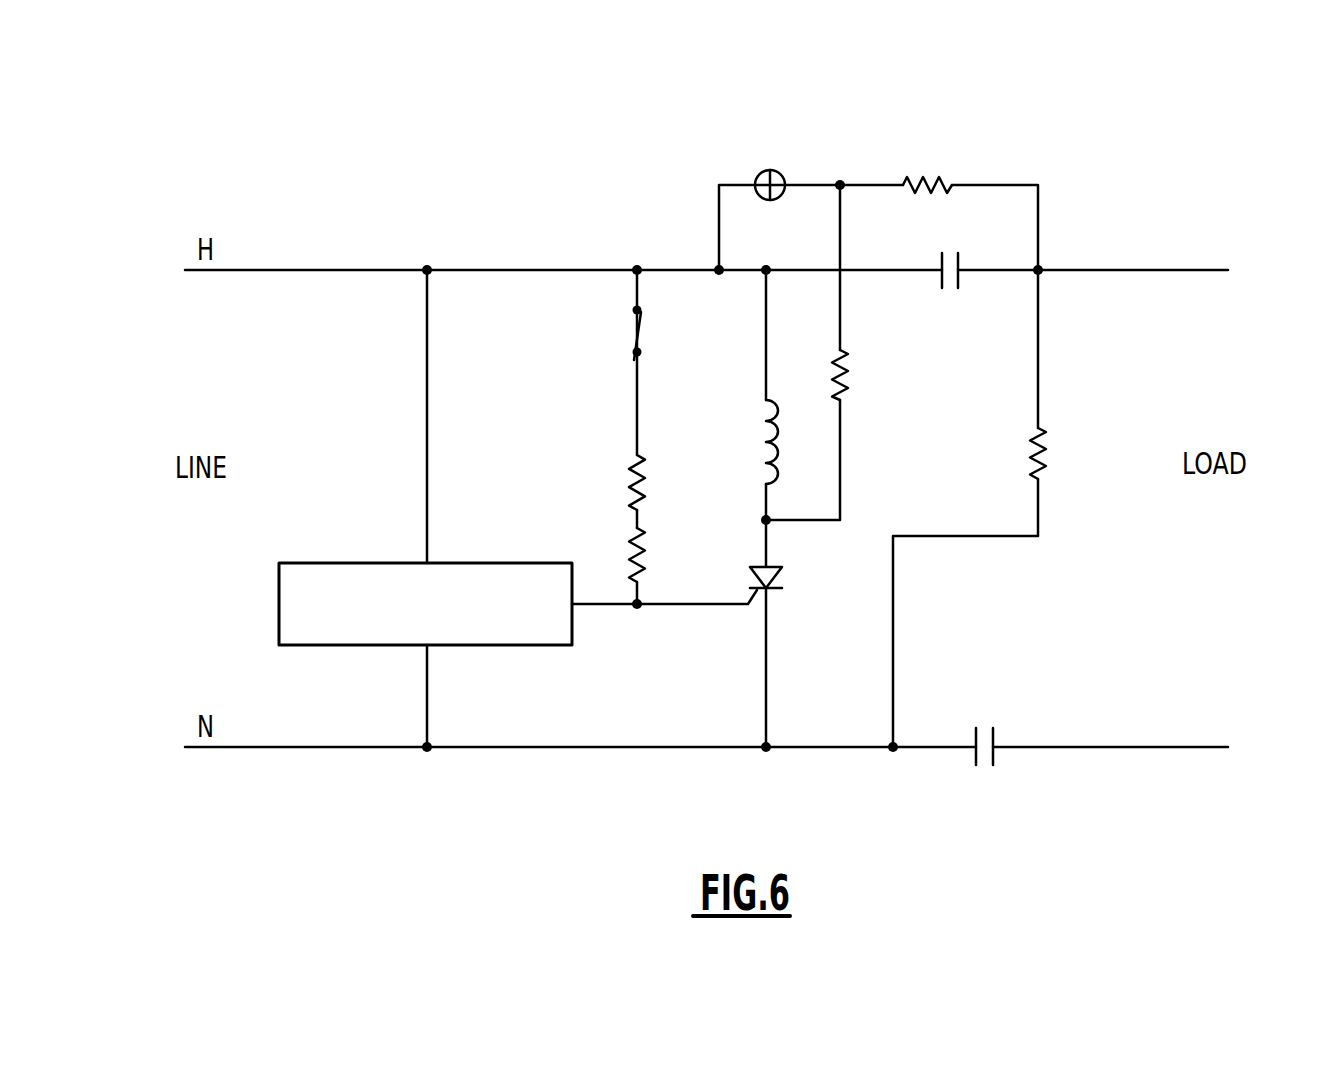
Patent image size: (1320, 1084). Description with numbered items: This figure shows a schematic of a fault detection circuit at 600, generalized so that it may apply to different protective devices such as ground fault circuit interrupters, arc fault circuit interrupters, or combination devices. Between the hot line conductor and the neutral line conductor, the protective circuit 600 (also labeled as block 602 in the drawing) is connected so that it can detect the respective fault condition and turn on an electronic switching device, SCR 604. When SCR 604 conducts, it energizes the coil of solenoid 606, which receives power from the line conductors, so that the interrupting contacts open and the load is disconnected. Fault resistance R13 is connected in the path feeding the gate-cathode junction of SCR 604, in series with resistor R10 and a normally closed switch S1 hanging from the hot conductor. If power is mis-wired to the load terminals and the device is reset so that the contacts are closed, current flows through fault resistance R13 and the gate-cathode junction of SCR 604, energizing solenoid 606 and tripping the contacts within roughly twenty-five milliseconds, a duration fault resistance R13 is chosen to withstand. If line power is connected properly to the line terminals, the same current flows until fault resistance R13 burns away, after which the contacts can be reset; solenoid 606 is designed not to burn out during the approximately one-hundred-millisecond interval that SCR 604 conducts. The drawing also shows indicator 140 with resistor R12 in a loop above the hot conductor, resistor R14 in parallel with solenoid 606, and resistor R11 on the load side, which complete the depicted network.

The protective circuit 600 is at (492, 222).
The protective circuit 602 is at (333, 562).
The SCR 604 is at (783, 578).
The solenoid 606 is at (764, 411).
The indicator 140 is at (781, 175).
The normally closed switch S1 is at (620, 336).
The resistor R10 is at (668, 491).
The resistor R11 is at (999, 508).
The resistor R12 is at (970, 204).
The fault resistance R13 is at (668, 566).
The resistor R14 is at (838, 352).